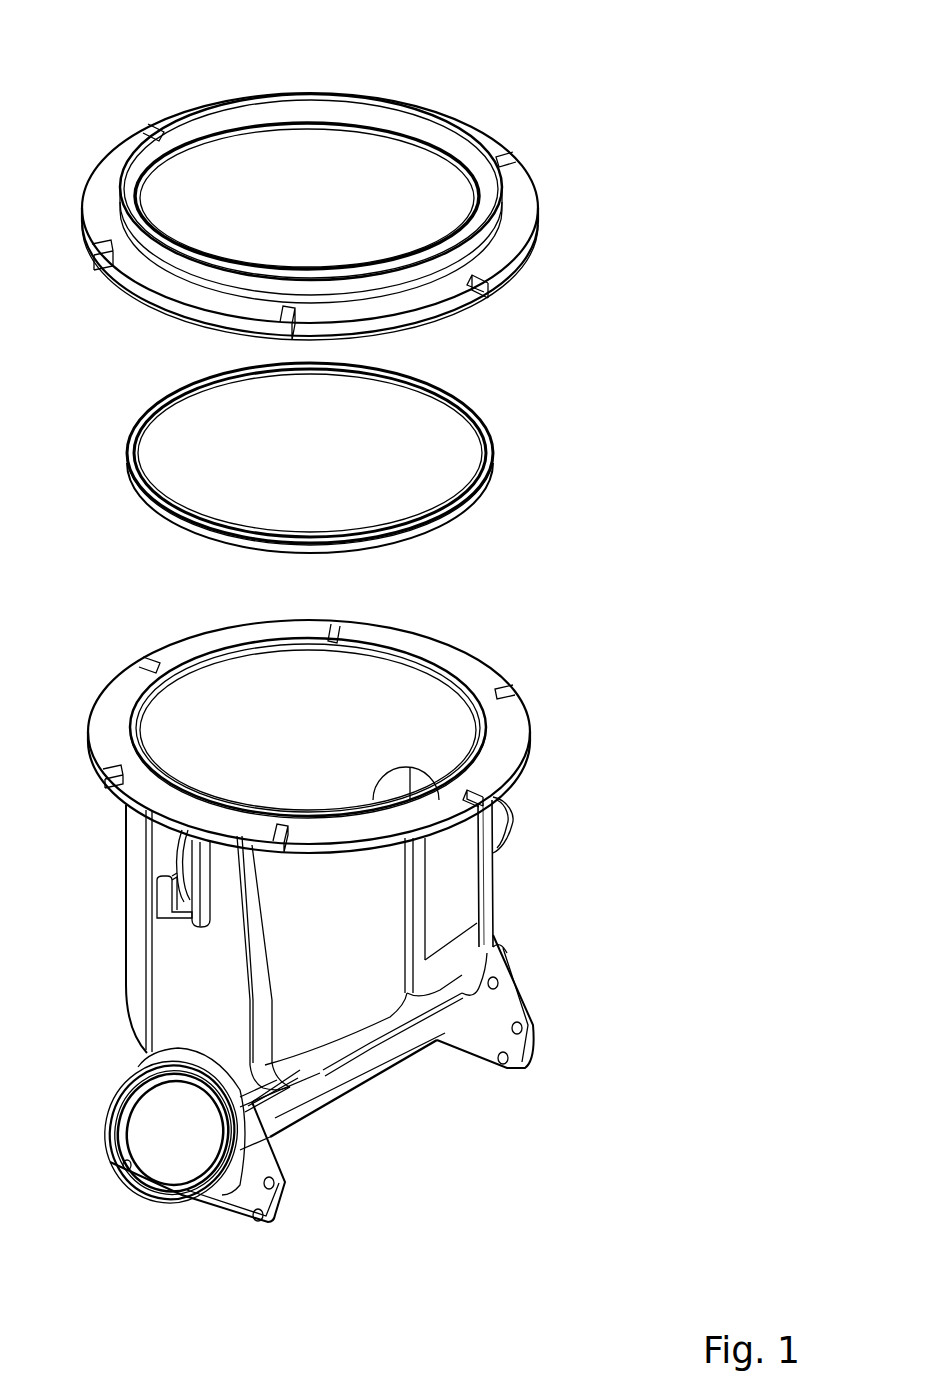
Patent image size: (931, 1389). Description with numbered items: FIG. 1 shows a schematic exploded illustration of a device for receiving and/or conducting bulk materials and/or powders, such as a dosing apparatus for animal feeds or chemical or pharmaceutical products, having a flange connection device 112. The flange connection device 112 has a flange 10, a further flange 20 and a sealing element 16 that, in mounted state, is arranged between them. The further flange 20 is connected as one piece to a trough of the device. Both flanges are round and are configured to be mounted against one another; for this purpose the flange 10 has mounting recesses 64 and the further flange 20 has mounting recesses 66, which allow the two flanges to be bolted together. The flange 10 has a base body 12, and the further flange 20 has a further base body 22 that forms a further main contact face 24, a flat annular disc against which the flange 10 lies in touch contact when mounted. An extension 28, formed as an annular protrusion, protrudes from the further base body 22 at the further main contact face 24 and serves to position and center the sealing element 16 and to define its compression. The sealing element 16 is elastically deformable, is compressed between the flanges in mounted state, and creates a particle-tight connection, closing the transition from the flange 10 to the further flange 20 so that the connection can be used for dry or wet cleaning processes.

The flange 10 is at (496, 92).
The base body 12 is at (345, 216).
The mounting recess 64 is at (487, 294).
The flange connection device 112 is at (395, 458).
The sealing element 16 is at (436, 521).
The further flange 20 is at (360, 896).
The further base body 22 is at (360, 755).
The further main contact face 24 is at (470, 684).
The extension 28 is at (470, 774).
The mounting recess 66 is at (490, 803).